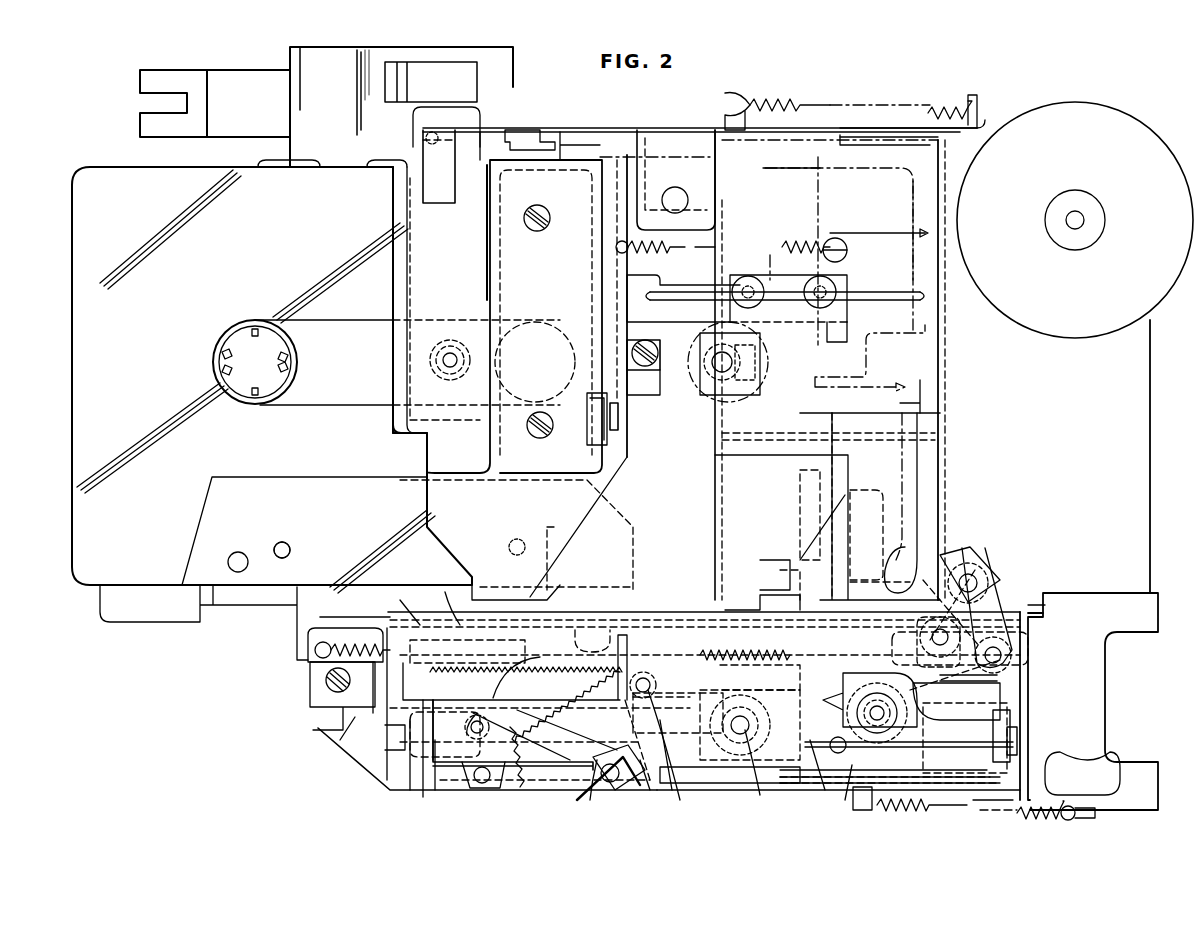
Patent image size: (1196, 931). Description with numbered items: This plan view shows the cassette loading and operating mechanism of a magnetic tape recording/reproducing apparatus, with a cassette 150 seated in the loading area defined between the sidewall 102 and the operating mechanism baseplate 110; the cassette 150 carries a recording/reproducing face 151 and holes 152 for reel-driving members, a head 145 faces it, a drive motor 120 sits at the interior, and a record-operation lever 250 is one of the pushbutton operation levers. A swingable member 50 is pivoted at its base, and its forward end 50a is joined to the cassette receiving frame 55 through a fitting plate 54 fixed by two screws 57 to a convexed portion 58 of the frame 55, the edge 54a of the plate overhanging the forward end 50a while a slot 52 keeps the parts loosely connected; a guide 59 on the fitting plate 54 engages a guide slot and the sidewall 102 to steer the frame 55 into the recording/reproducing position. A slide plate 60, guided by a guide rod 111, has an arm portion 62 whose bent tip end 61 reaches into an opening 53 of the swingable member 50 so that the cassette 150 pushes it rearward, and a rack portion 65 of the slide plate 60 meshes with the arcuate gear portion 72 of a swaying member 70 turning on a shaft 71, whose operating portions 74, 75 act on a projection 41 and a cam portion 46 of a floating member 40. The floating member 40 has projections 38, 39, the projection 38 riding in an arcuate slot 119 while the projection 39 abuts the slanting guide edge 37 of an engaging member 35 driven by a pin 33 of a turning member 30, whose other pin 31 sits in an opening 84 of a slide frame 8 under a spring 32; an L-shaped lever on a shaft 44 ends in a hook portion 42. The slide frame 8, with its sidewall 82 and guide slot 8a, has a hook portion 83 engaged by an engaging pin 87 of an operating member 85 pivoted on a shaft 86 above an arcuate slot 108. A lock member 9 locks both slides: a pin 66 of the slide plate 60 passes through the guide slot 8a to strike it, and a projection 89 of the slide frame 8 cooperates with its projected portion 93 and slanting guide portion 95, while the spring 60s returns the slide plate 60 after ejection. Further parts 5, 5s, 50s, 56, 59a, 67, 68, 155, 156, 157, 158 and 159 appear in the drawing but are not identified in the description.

The spring 5 is at (773, 268).
The spring 5s is at (660, 240).
The slide frame 8 is at (420, 700).
The guide slot 8a is at (655, 675).
The lock member 9 is at (990, 690).
The turning member 30 is at (310, 676).
The pin 31 is at (405, 610).
The spring 32 is at (376, 625).
The pin 33 is at (420, 782).
The engaging member 35 is at (478, 790).
The slanting guide edge 37 is at (520, 690).
The projection 38 is at (730, 720).
The projection 39 is at (560, 668).
The floating member 40 is at (718, 780).
The projection 41 is at (562, 805).
The hook portion 42 is at (866, 805).
The shaft 44 is at (877, 700).
The cam portion 46 is at (658, 782).
The swingable member 50 is at (895, 460).
The forward end 50a is at (590, 168).
The spring 50s is at (758, 105).
The slot 52 is at (618, 430).
The opening 53 is at (857, 413).
The fitting plate 54 is at (500, 246).
The edge 54a is at (622, 175).
The cassette receiving frame 55 is at (418, 424).
The stop 56 is at (618, 413).
The screws 57 is at (540, 208).
The convexed portion 58 is at (487, 224).
The guide 59 is at (485, 128).
The tab 59a is at (525, 128).
The slide plate 60 is at (400, 788).
The spring 60s is at (720, 660).
The tip end portion 61 is at (740, 380).
The arm portion 62 is at (700, 505).
The rack portion 65 is at (452, 605).
The pin 66 is at (680, 782).
The lug 67 is at (790, 580).
The lug 68 is at (755, 600).
The swaying member 70 is at (585, 798).
The shaft 71 is at (645, 795).
The arcuate gear portion 72 is at (508, 786).
The operating portion 74 is at (445, 782).
The operating portion 75 is at (610, 792).
The sidewall 82 is at (822, 782).
The hook portion 83 is at (1005, 680).
The opening 84 is at (490, 610).
The operating member 85 is at (968, 550).
The shaft 86 is at (985, 555).
The engaging pin 87 is at (1002, 655).
The projection 89 is at (838, 737).
The projected portion 93 is at (850, 800).
The slanting guide portion 95 is at (795, 783).
The sidewall 102 is at (846, 124).
The arcuate slot 108 is at (990, 605).
The operating mechanism baseplate 110 is at (330, 733).
The guide rod 111 is at (965, 745).
The arcuate slot 119 is at (755, 783).
The drive motor 120 is at (992, 300).
The head 145 is at (555, 535).
The cassette 150 is at (120, 180).
The recording/reproducing face 151 is at (286, 552).
The holes 152 is at (266, 320).
The lever 155 is at (627, 272).
The roller 156 is at (745, 278).
The screw 157 is at (628, 345).
The lug 158 is at (835, 342).
The screw 159 is at (830, 240).
The record-operation lever 250 is at (236, 80).